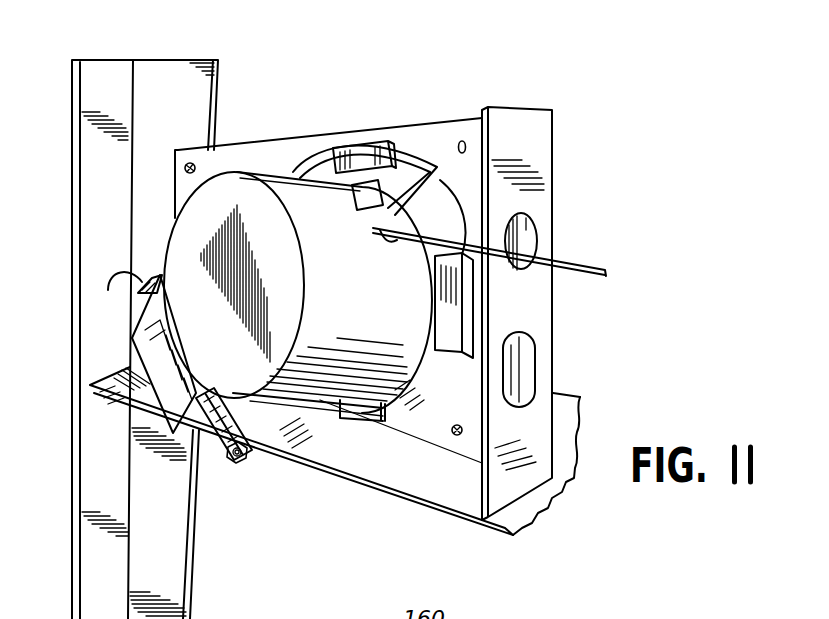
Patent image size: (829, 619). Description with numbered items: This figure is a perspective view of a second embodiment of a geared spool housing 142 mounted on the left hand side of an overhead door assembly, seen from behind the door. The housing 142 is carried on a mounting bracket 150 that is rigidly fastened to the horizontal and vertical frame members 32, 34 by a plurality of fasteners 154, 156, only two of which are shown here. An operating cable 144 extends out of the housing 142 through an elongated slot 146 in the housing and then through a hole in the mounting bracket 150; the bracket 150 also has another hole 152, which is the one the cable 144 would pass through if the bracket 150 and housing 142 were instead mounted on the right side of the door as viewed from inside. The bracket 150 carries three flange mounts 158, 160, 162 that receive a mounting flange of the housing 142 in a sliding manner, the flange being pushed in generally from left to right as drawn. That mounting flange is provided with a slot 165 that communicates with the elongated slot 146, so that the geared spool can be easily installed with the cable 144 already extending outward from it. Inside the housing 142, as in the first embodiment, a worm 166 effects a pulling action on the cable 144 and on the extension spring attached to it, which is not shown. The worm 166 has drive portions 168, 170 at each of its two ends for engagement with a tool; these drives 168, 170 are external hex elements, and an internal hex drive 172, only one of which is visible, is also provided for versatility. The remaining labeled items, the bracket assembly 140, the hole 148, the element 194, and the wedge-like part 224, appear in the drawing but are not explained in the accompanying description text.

The horizontal frame member 32 is at (507, 530).
The vertical frame member 34 is at (112, 58).
The mounting bracket 140 is at (302, 128).
The geared spool housing 142 is at (172, 240).
The operating cable 144 is at (577, 263).
The elongated slot 146 is at (384, 186).
The hole 148 is at (527, 225).
The mounting bracket 150 is at (553, 135).
The hole 152 is at (522, 375).
The fastener 154 is at (452, 435).
The fastener 156 is at (186, 166).
The flange mount 158 is at (355, 153).
The flange mount 160 is at (440, 305).
The flange mount 162 is at (360, 407).
The slot 165 is at (464, 142).
The worm 166 is at (233, 464).
The drive portion 168 is at (200, 443).
The drive portion 170 is at (123, 298).
The internal hex drive 172 is at (248, 464).
The base corner 194 is at (120, 400).
The wedge bracket 224 is at (150, 347).